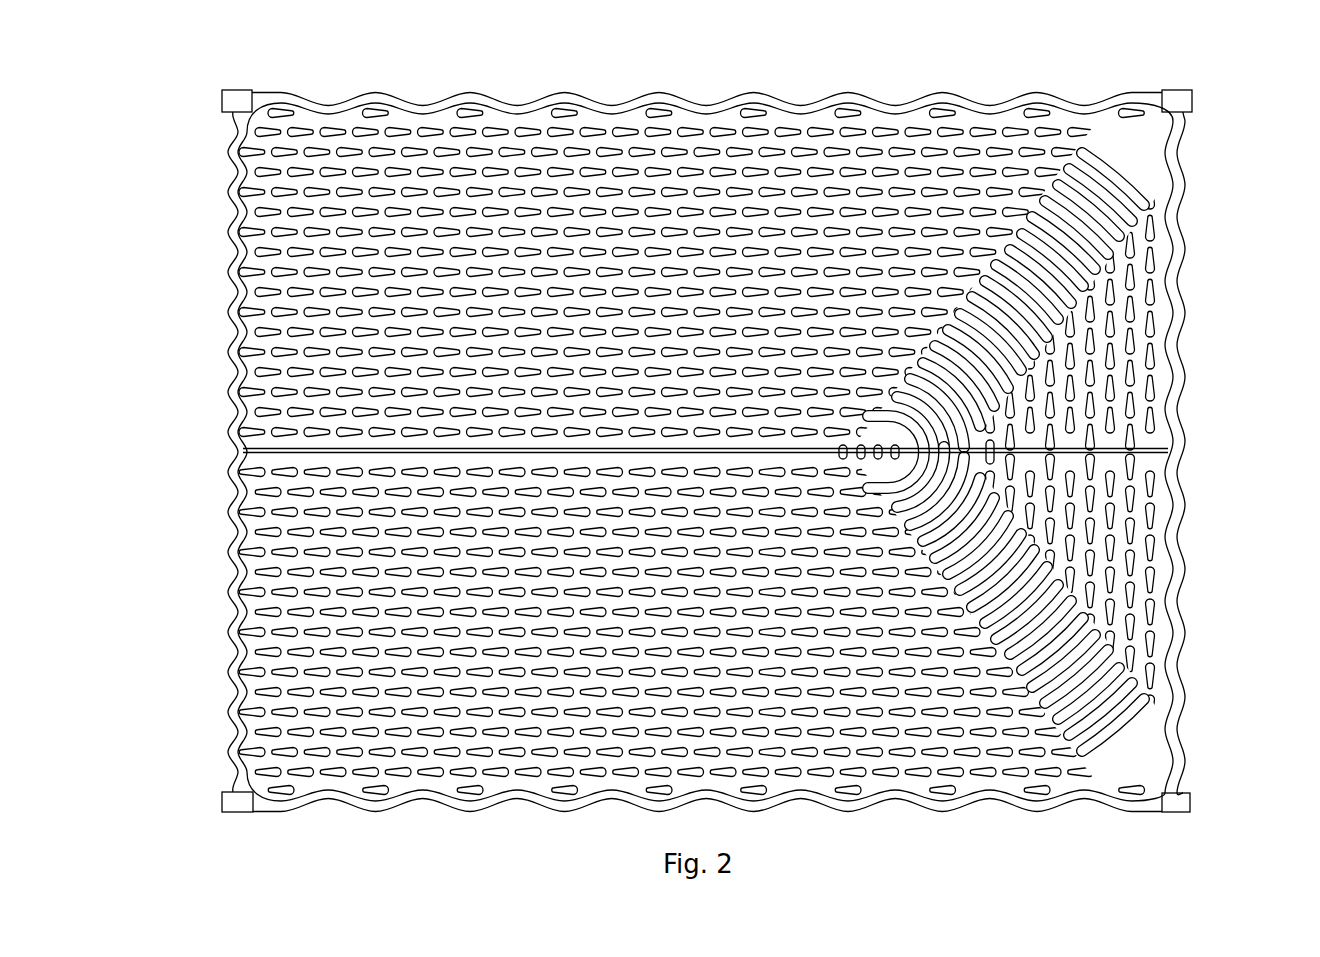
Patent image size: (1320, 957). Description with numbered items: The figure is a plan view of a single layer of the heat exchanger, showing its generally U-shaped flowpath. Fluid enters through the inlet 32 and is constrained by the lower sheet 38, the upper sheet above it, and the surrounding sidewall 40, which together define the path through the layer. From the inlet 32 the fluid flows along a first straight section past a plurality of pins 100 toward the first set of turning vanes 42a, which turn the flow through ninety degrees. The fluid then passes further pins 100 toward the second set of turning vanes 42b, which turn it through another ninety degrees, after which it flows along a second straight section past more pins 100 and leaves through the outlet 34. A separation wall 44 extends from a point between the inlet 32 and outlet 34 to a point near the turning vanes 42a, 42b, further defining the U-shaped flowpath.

The sidewall 40 is at (832, 100).
The pins 100 is at (946, 130).
The first set of turning vanes 42a is at (1095, 305).
The second set of turning vanes 42b is at (1110, 642).
The separation wall 44 is at (338, 448).
The inlet 32 is at (200, 283).
The outlet 34 is at (210, 594).
The lower sheet 38 is at (243, 410).